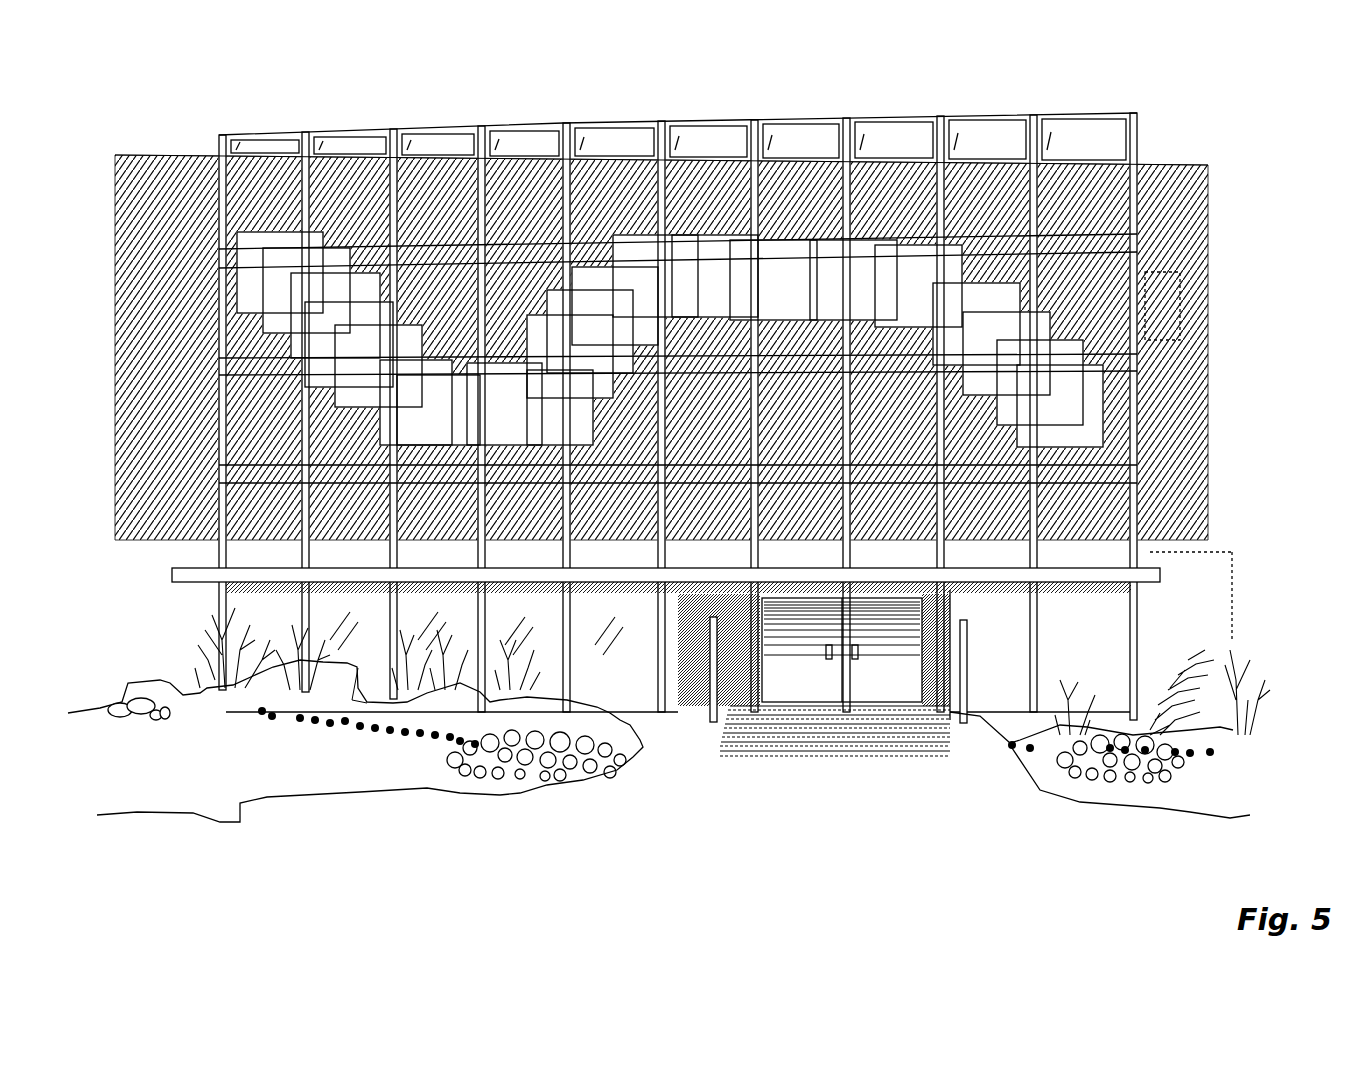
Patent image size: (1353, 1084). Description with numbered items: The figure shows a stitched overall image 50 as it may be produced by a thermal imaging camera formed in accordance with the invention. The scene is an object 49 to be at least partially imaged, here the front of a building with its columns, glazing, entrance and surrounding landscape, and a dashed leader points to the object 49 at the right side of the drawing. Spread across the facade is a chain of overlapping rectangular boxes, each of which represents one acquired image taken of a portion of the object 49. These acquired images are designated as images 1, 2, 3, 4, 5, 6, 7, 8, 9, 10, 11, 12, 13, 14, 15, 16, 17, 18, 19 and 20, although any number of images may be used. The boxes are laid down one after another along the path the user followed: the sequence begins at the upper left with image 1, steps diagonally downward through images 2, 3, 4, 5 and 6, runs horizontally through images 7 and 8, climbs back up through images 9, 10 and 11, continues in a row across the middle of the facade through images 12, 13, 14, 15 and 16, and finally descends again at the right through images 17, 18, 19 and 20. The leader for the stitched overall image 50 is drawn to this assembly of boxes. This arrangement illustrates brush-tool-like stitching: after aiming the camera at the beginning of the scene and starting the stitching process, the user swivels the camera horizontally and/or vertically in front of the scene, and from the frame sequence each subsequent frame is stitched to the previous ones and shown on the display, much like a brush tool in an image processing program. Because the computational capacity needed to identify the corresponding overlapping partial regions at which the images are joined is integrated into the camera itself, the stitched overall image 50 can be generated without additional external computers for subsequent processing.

The object 49 is at (1122, 317).
The stitched overall image 50 is at (783, 250).
The image 1 is at (280, 272).
The image 2 is at (306, 290).
The image 3 is at (335, 315).
The image 4 is at (349, 344).
The image 5 is at (378, 366).
The image 6 is at (430, 402).
The image 7 is at (504, 404).
The image 8 is at (560, 407).
The image 9 is at (570, 356).
The image 10 is at (590, 331).
The image 11 is at (615, 306).
The image 12 is at (655, 276).
The image 13 is at (715, 276).
The image 14 is at (773, 280).
The image 15 is at (853, 280).
The image 16 is at (918, 286).
The image 17 is at (976, 324).
The image 18 is at (1006, 353).
The image 19 is at (1040, 382).
The image 20 is at (1060, 406).